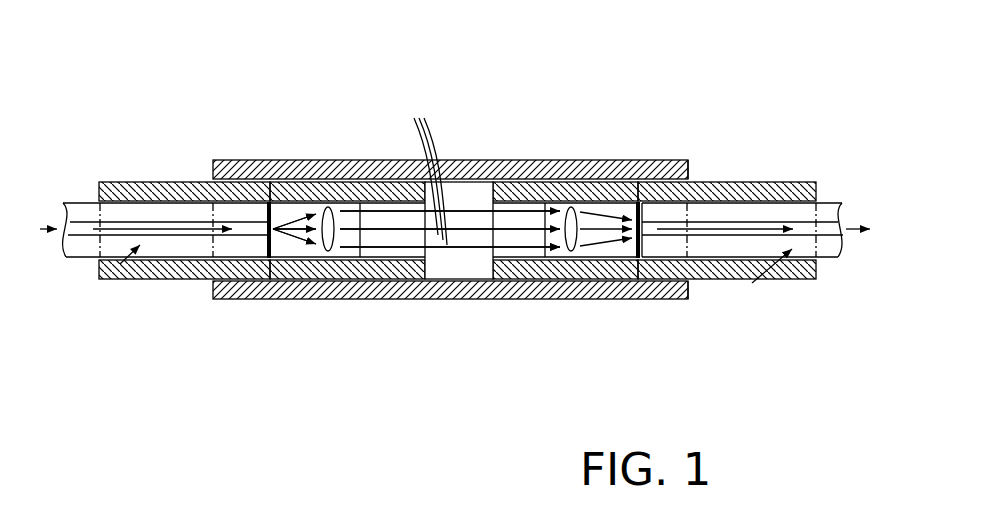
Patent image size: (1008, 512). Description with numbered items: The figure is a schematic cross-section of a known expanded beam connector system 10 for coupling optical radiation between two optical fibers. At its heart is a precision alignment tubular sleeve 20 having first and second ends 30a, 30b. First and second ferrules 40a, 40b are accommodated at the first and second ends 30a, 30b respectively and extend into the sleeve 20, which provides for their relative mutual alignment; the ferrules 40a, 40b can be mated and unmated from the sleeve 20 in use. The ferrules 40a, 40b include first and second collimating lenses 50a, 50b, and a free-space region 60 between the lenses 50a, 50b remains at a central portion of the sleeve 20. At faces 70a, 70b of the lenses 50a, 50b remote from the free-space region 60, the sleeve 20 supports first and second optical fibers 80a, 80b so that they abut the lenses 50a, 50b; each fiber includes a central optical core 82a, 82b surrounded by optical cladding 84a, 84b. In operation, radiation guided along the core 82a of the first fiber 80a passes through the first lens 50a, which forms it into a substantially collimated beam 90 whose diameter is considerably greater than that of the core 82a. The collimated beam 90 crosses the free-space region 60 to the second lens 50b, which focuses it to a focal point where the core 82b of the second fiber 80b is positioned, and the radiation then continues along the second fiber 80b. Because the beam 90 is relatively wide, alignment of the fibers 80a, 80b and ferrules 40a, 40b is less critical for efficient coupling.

The expanded beam connector system 10 is at (570, 52).
The precision alignment tubular sleeve 20 is at (437, 282).
The first end of the sleeve 30a is at (211, 163).
The second end of the sleeve 30b is at (688, 290).
The first ferrule 40a is at (180, 280).
The second ferrule 40b is at (718, 182).
The first collimating lens 50a is at (326, 243).
The second collimating lens 50b is at (565, 246).
The free-space region 60 is at (466, 197).
The face of the first lens 70a is at (269, 202).
The face of the second lens 70b is at (640, 202).
The first optical fiber 80a is at (98, 281).
The second optical fiber 80b is at (752, 283).
The central optical core of the first fiber 82a is at (82, 234).
The central optical core of the second fiber 82b is at (827, 258).
The optical cladding of the first fiber 84a is at (81, 213).
The optical cladding of the second fiber 84b is at (825, 205).
The collimated beam 90 is at (425, 165).